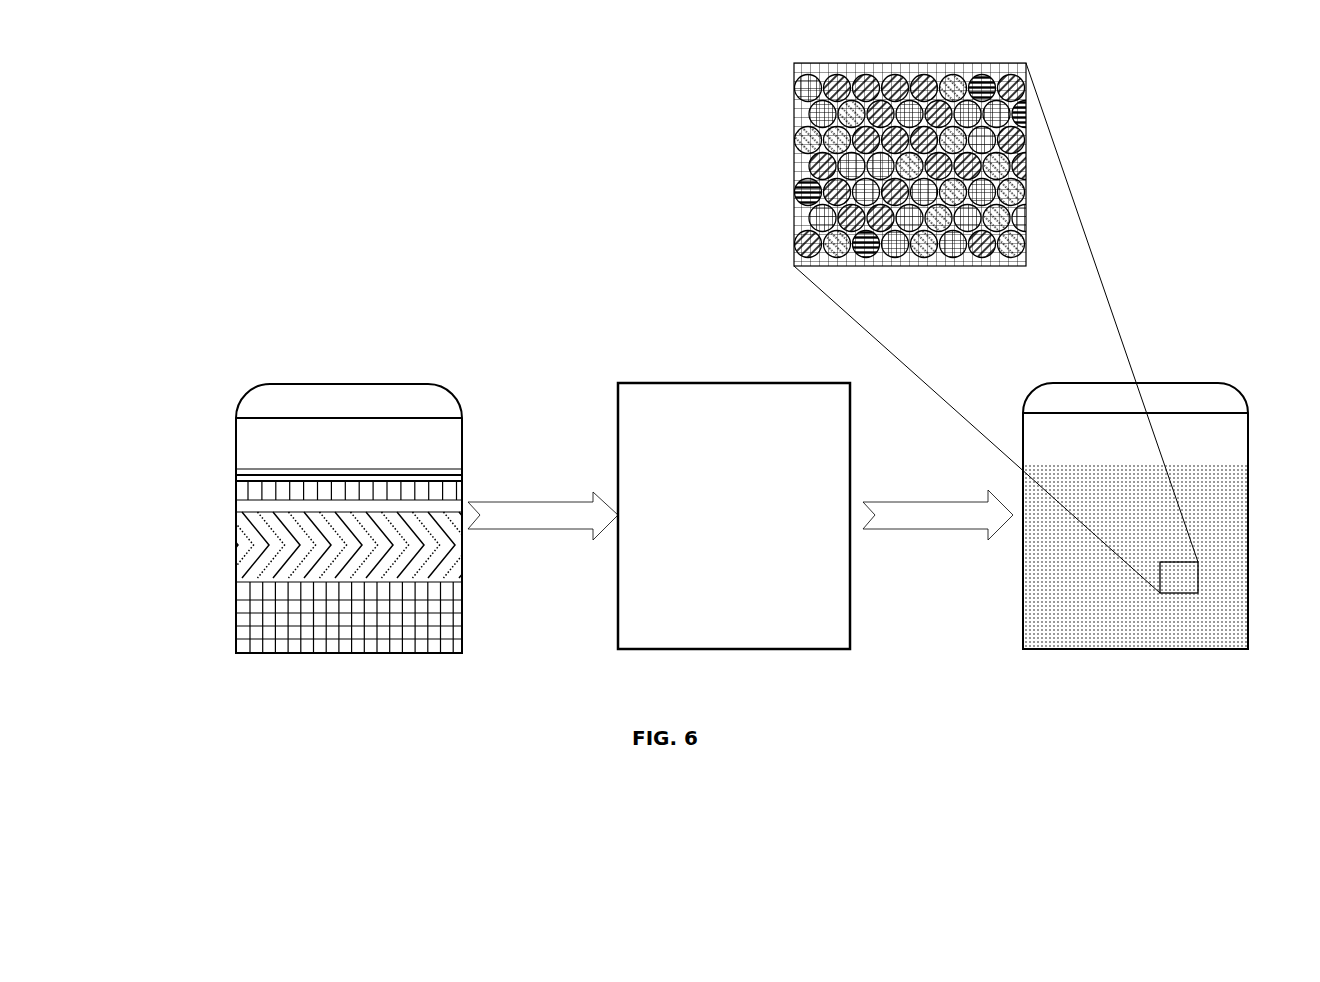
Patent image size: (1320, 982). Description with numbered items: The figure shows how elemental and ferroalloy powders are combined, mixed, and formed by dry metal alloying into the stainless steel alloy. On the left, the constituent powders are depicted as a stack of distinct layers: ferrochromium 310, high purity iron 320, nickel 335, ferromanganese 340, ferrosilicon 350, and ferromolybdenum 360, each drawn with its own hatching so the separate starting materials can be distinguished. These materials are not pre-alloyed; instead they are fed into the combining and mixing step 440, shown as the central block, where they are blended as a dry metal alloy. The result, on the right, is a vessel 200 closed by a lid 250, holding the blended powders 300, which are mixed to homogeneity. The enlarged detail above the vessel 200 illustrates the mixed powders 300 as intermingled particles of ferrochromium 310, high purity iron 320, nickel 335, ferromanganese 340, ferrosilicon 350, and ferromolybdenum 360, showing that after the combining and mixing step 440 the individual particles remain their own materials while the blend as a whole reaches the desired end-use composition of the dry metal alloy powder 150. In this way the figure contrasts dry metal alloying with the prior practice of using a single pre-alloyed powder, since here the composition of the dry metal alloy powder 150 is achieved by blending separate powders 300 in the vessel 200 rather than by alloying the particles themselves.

The 316L dry metal alloy powder 150 is at (329, 135).
The processing vessel 200 is at (1023, 632).
The lid 250 is at (1090, 384).
The powder 300 is at (1123, 649).
The ferrochromium 310 is at (270, 563).
The high purity iron 320 is at (270, 612).
The nickel 335 is at (268, 533).
The ferromanganese 340 is at (268, 510).
The ferrosilicon 350 is at (258, 483).
The ferromolybdenum 360 is at (260, 470).
The combining and mixing 440 is at (734, 516).